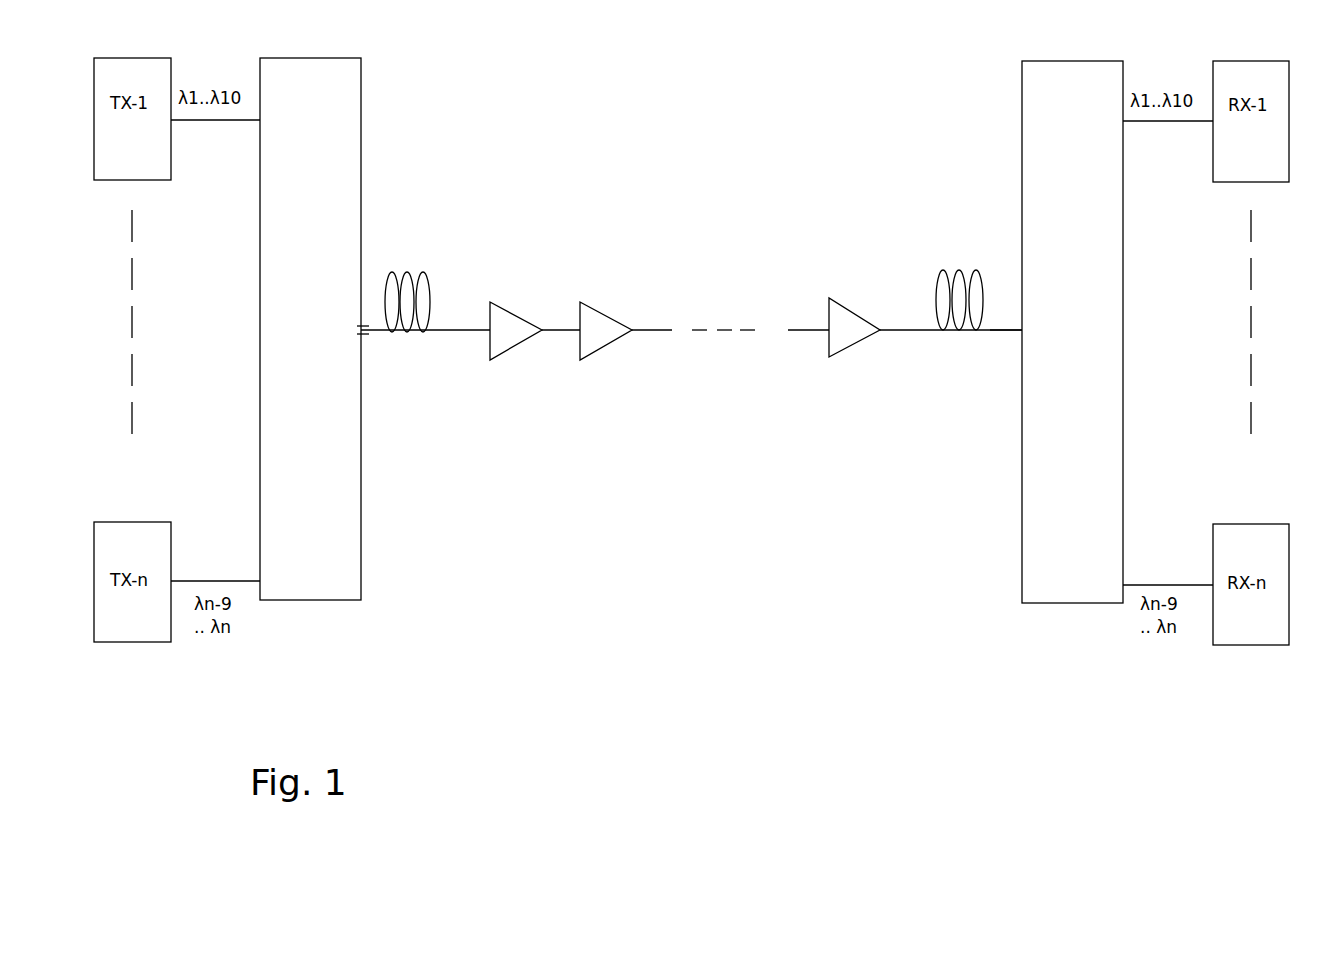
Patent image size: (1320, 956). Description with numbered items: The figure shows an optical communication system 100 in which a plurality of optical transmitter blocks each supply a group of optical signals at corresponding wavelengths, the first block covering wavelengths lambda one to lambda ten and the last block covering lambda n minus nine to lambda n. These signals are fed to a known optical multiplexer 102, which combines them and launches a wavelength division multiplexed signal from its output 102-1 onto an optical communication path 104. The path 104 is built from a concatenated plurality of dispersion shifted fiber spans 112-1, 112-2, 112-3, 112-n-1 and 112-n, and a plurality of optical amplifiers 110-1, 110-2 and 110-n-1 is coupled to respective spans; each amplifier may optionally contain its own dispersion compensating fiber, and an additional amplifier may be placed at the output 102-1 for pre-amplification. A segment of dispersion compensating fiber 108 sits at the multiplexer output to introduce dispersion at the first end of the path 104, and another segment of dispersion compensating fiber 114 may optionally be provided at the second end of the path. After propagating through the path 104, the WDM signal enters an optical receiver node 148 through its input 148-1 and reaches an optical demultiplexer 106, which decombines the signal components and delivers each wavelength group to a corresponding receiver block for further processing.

The optical communication system 100 is at (1117, 733).
The optical multiplexer 102 is at (320, 601).
The output of multiplexer 102-1 is at (368, 340).
The optical communication path 104 is at (658, 591).
The optical demultiplexer 106 is at (1073, 60).
The segment of dispersion compensating fiber 108 is at (398, 268).
The optical amplifier 110-1 is at (517, 350).
The optical amplifier 110-2 is at (603, 310).
The optical amplifier 110-n-1 is at (858, 342).
The dispersion shifted fiber span 112-1 is at (452, 328).
The dispersion shifted fiber span 112-2 is at (558, 328).
The dispersion shifted fiber span 112-3 is at (657, 332).
The dispersion shifted fiber span 112-n-1 is at (815, 328).
The dispersion shifted fiber span 112-n is at (926, 328).
The segment of dispersion compensating fiber 114 is at (957, 270).
The optical receiver node 148 is at (982, 550).
The input of receiver node 148-1 is at (1003, 315).